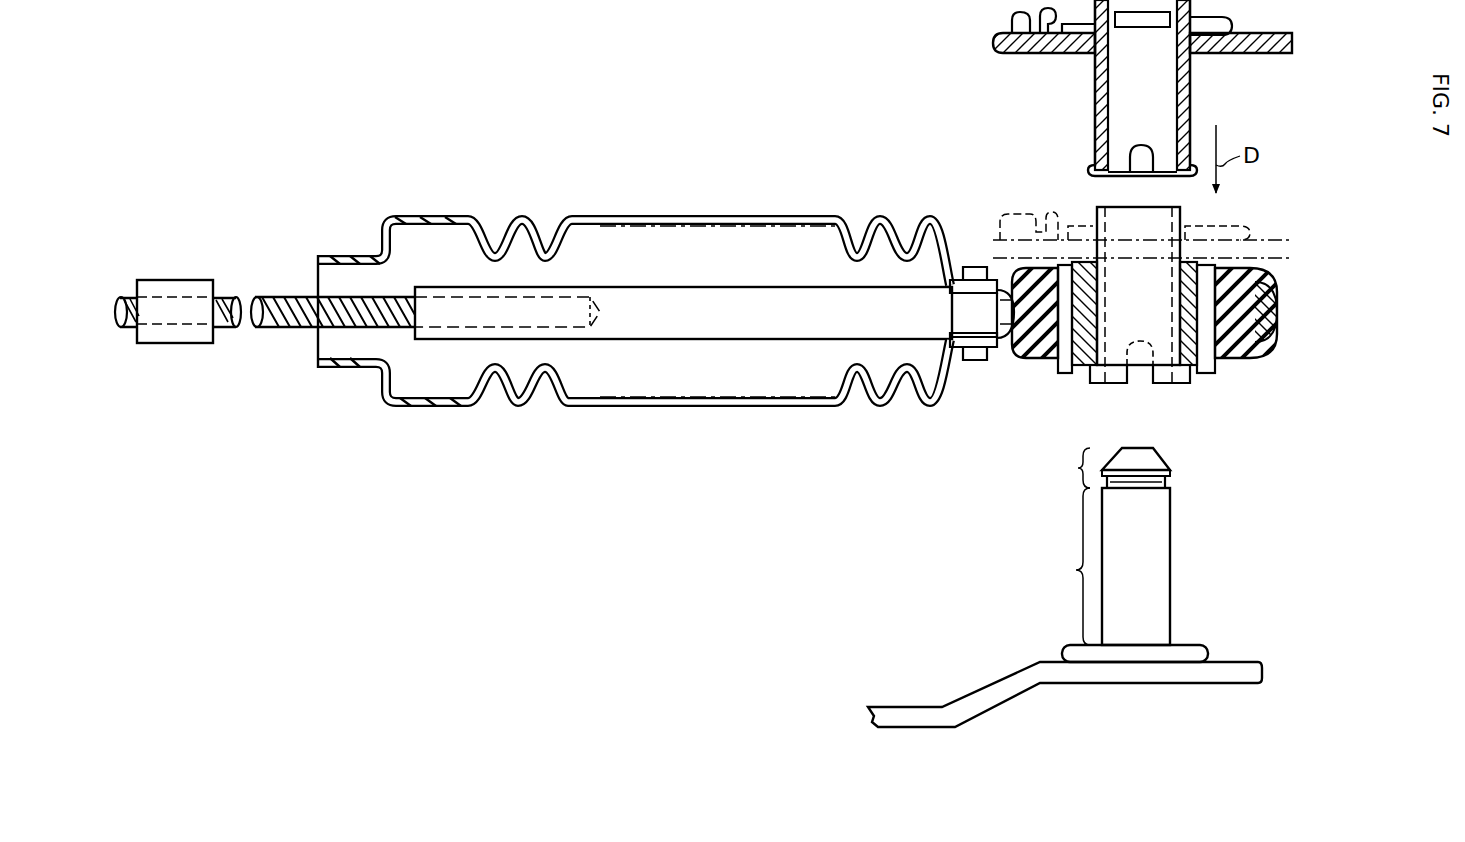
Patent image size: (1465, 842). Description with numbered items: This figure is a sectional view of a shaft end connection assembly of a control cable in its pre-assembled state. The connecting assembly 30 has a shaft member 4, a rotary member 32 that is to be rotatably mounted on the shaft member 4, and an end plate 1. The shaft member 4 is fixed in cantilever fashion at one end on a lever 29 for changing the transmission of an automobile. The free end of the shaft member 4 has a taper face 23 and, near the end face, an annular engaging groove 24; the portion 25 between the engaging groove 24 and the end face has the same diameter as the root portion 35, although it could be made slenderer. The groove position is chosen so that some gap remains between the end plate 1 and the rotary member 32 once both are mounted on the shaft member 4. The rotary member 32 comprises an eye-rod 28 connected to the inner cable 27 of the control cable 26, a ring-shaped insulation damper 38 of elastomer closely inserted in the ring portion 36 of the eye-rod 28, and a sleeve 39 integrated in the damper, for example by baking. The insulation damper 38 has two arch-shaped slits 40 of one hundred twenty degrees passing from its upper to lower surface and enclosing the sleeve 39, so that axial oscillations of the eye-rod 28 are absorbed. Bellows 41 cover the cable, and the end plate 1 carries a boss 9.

The end plate 1 is at (1236, 96).
The boss 9 is at (1098, 100).
The control cable 26 is at (188, 292).
The inner cable 27 is at (300, 320).
The eye-rod 28 is at (620, 320).
The boot 41 is at (922, 408).
The connecting assembly 30 is at (972, 188).
The rotary member 32 is at (1234, 384).
The sleeve 39 is at (1208, 275).
The insulation damper 38 is at (1262, 372).
The slit 40 is at (1032, 357).
The ring portion 36 is at (1275, 312).
The shaft member 4 is at (1158, 590).
The taper face 23 is at (1170, 458).
The engaging groove 24 is at (1168, 482).
The portion 25 is at (1062, 468).
The root portion 35 is at (1062, 566).
The lever 29 is at (972, 705).